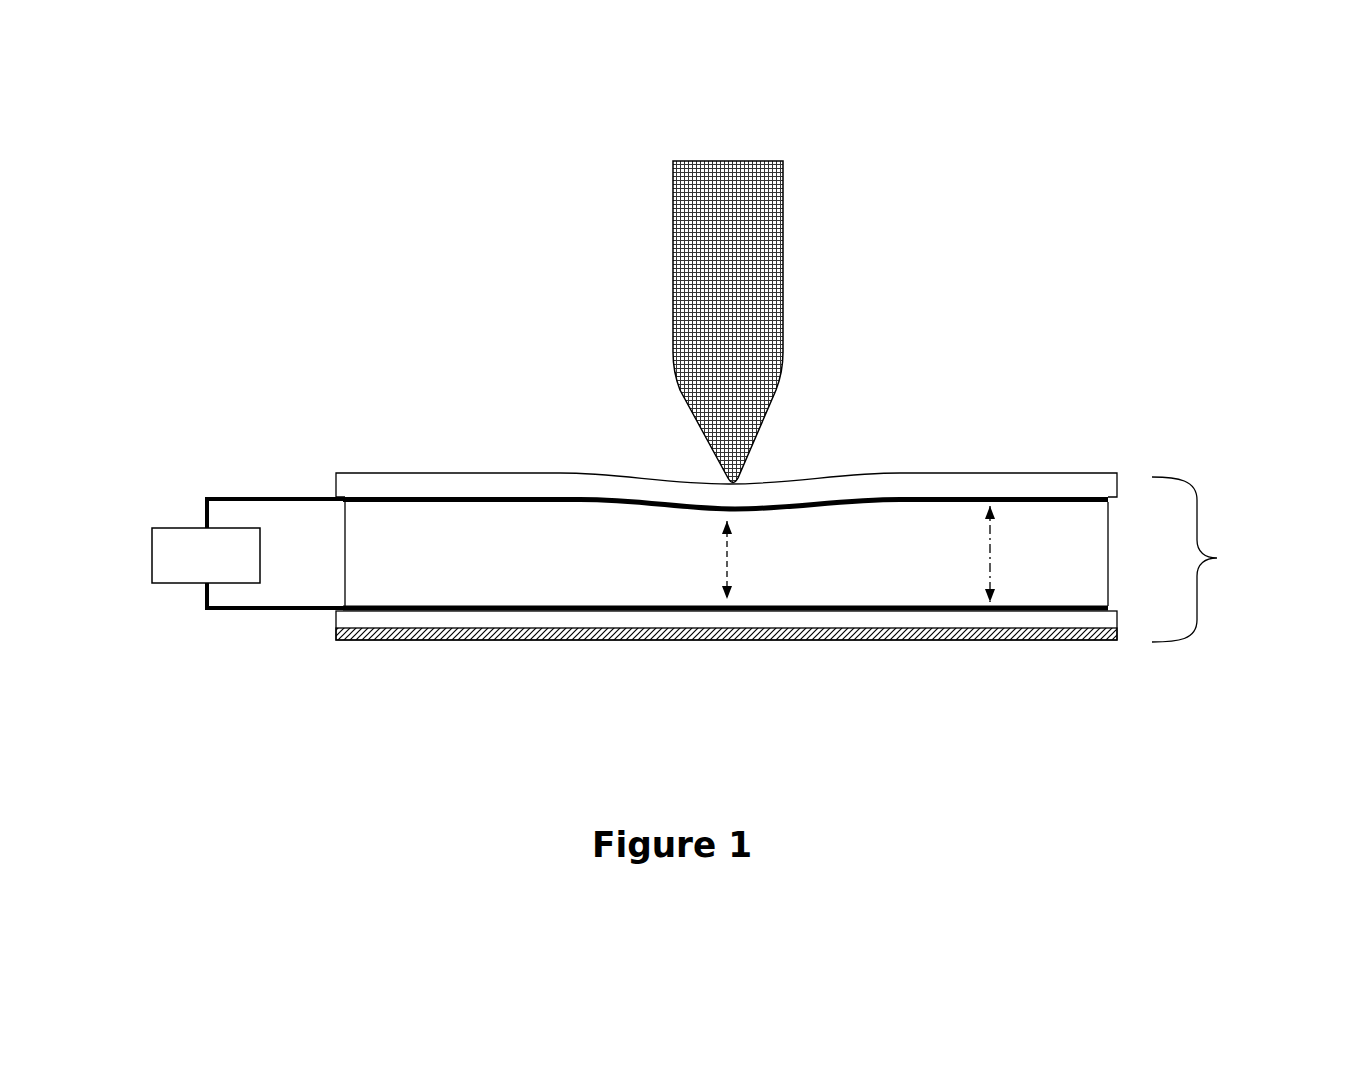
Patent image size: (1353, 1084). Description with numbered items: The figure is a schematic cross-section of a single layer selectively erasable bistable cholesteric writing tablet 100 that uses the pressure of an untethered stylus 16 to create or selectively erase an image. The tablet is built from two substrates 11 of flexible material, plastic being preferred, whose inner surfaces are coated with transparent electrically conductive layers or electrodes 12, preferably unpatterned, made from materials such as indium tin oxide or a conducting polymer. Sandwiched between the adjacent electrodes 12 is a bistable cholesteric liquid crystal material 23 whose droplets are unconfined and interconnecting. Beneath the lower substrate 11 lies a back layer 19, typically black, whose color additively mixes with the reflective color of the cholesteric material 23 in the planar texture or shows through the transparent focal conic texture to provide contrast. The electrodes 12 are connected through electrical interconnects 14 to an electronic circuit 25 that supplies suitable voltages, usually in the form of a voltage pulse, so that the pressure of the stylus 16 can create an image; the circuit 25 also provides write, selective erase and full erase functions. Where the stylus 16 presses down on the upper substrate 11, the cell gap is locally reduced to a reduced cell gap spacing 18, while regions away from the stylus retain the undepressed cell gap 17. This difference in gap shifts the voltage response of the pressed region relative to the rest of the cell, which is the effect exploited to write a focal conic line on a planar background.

The bistable cholesteric writing tablet 100 is at (1217, 558).
The substrates 11 is at (493, 610).
The electrodes 12 is at (1057, 503).
The electrical interconnects 14 is at (317, 499).
The stylus 16 is at (735, 305).
The undepressed cell gap 17 is at (991, 548).
The reduced cell gap spacing 18 is at (731, 562).
The back layer 19 is at (1052, 642).
The bistable cholesteric liquid crystal material 23 is at (555, 548).
The electronic circuit 25 is at (173, 528).